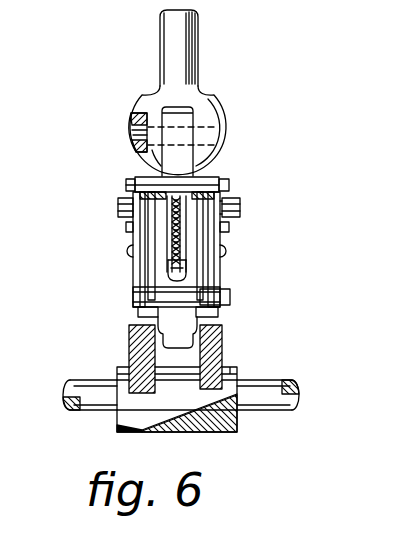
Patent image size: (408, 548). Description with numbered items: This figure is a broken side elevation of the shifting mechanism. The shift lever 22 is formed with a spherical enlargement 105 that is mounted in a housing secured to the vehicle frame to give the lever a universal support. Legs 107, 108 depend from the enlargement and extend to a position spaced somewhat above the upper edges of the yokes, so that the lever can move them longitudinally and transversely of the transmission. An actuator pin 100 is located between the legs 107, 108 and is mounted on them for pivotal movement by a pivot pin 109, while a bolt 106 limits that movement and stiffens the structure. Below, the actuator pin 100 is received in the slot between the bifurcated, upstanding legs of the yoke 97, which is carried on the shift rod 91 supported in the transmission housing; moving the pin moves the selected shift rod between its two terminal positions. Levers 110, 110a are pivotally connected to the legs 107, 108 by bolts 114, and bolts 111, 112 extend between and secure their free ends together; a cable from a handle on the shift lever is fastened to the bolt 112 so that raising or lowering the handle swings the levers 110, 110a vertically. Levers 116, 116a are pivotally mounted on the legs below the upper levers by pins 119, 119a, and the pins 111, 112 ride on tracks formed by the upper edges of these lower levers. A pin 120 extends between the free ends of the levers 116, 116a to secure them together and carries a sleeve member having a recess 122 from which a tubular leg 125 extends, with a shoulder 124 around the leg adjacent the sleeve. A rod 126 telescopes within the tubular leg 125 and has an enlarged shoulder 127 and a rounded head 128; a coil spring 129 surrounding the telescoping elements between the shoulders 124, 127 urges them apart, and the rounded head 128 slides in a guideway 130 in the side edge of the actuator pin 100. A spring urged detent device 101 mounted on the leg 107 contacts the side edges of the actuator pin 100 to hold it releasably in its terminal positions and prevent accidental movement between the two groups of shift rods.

The shift lever 22 is at (184, 40).
The spherical enlargement 105 is at (160, 100).
The pivot pin 109 is at (131, 133).
The lever 110 is at (230, 180).
The lever 110a is at (127, 178).
The pin 120 is at (126, 188).
The recess 122 is at (168, 189).
The shoulder 124 is at (182, 195).
The bolt 111 is at (229, 185).
The tubular leg 125 is at (241, 200).
The bolts 114 is at (242, 212).
The bolt 112 is at (231, 228).
The lever 116 is at (220, 240).
The lever 116a is at (140, 240).
The pin 119 is at (225, 252).
The pin 119a is at (130, 251).
The rod 126 is at (172, 258).
The enlarged shoulder 127 is at (180, 277).
The rounded head 128 is at (185, 270).
The coil spring 129 is at (190, 207).
The guideway 130 is at (187, 262).
The leg 107 is at (218, 292).
The leg 108 is at (153, 295).
The spring urged detent device 101 is at (233, 303).
The bolt 106 is at (137, 311).
The actuator pin 100 is at (168, 342).
The yoke 97 is at (219, 344).
The shift rod 91 is at (298, 402).